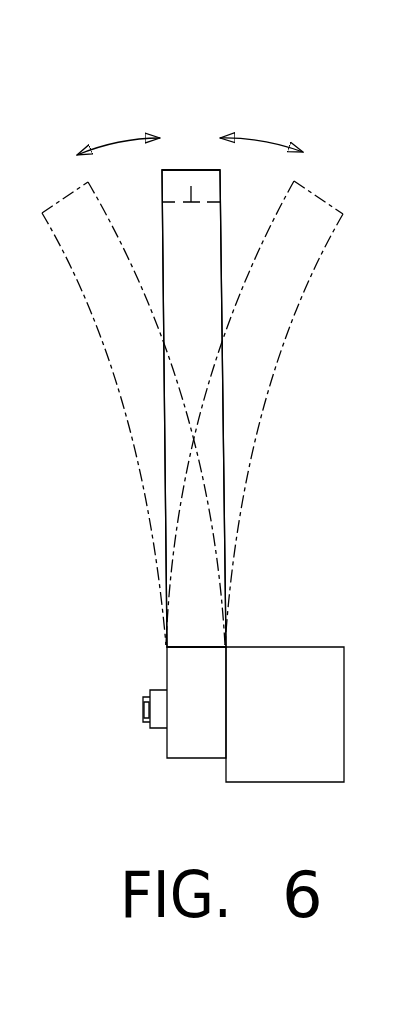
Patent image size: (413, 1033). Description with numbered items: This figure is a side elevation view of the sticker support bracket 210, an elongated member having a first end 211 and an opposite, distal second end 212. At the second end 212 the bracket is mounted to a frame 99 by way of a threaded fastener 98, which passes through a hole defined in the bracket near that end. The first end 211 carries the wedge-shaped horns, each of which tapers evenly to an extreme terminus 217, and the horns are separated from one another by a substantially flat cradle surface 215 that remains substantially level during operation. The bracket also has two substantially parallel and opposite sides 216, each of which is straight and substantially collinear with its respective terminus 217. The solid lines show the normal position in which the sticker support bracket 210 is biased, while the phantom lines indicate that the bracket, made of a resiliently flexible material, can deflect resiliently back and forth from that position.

The sticker support bracket 210 is at (303, 118).
The first end 211 is at (173, 232).
The sides 216 is at (215, 295).
The terminus 217 is at (177, 170).
The cradle surface 215 is at (192, 181).
The second end 212 is at (167, 743).
The frame 99 is at (293, 657).
The threaded fastener 98 is at (143, 715).